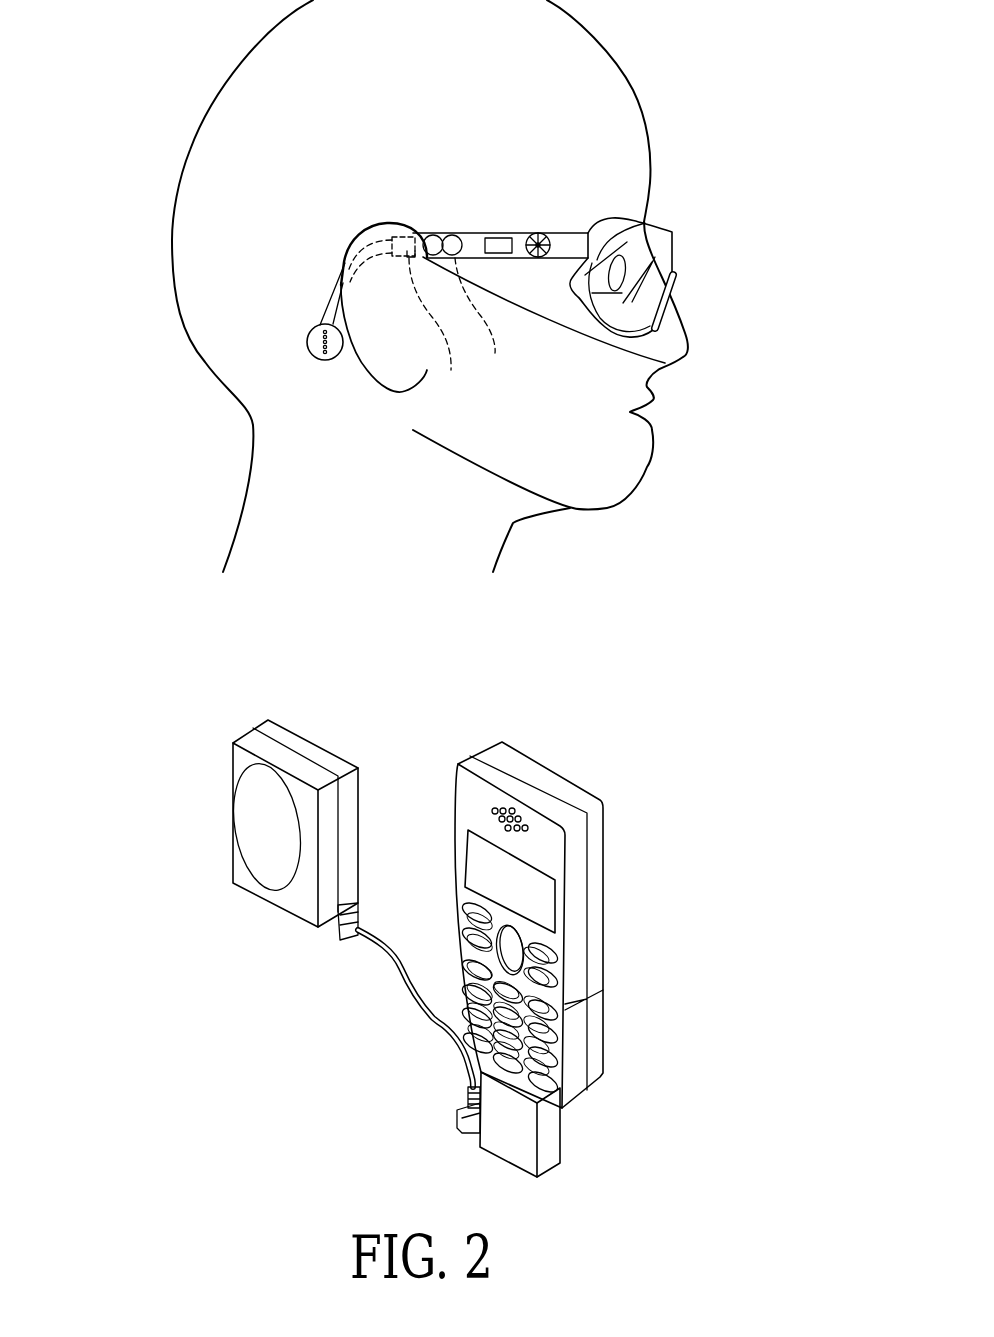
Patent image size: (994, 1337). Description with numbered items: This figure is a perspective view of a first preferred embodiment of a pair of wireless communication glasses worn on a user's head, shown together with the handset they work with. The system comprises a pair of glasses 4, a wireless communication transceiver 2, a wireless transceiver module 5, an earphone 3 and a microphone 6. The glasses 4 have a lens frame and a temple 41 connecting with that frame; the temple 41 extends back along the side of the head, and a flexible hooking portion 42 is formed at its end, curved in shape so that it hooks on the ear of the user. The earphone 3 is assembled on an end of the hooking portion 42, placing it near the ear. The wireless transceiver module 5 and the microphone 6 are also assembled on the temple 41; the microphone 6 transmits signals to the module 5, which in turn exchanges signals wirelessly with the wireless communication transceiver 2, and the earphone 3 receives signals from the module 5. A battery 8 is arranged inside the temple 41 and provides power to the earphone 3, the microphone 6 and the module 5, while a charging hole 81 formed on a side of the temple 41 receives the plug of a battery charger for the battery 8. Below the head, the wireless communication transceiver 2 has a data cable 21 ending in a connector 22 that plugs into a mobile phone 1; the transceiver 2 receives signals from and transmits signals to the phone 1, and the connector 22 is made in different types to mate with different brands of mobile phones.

The mobile phone 1 is at (598, 887).
The wireless communication transceiver 2 is at (242, 828).
The data cable 21 is at (403, 982).
The connector 22 is at (542, 1133).
The earphone 3 is at (310, 340).
The pair of glasses 4 is at (454, 220).
The temple 41 is at (677, 358).
The hooking portion 42 is at (333, 300).
The wireless transceiver module 5 is at (513, 230).
The microphone 6 is at (550, 230).
The battery 8 is at (480, 318).
The charging hole 81 is at (437, 329).